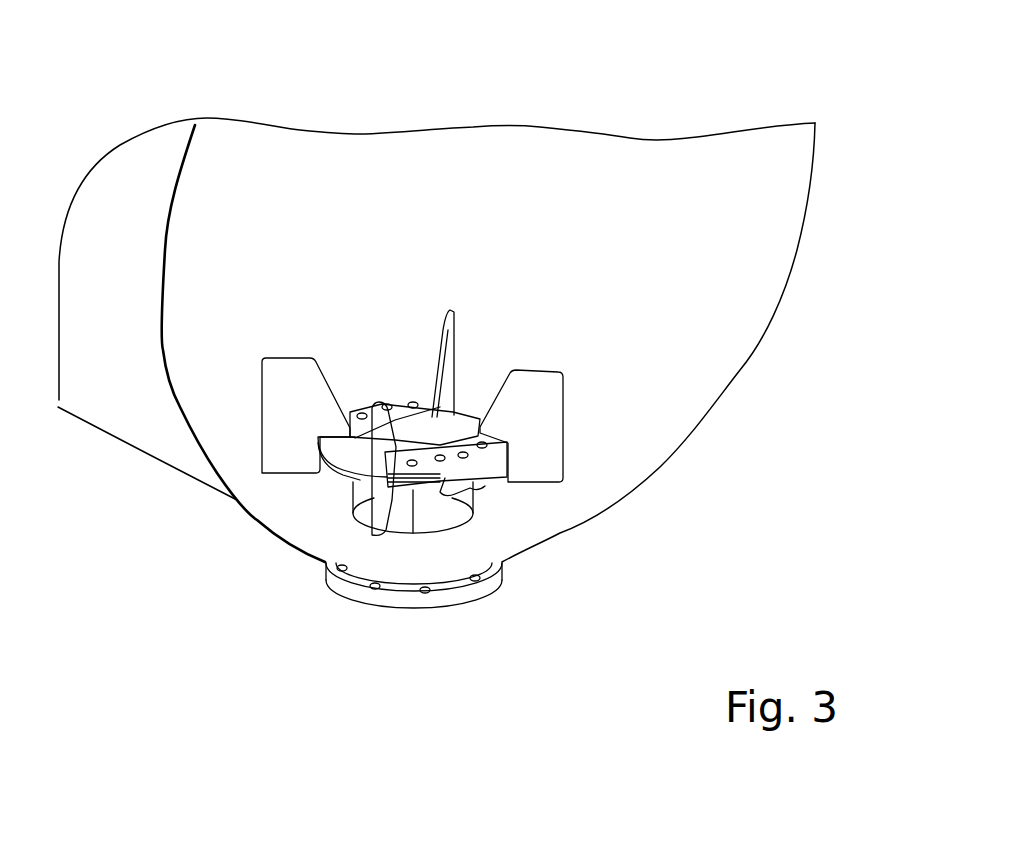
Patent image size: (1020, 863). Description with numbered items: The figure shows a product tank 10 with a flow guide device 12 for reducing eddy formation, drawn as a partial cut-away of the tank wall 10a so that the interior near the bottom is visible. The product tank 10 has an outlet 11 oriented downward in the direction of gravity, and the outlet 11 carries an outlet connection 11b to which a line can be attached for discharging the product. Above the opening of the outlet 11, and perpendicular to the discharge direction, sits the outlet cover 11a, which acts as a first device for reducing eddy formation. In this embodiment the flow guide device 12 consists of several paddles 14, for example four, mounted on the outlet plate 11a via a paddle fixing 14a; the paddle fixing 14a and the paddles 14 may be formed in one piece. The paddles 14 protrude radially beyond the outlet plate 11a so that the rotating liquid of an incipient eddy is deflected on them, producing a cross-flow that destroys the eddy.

The product tank 10 is at (665, 106).
The vessel wall 10a is at (673, 313).
The outlet 11 is at (463, 602).
The outlet cover 11a is at (333, 467).
The outlet connection 11b is at (425, 600).
The flow guide device 12 is at (391, 358).
The paddles 14 is at (540, 438).
The paddle fixing 14a is at (507, 477).